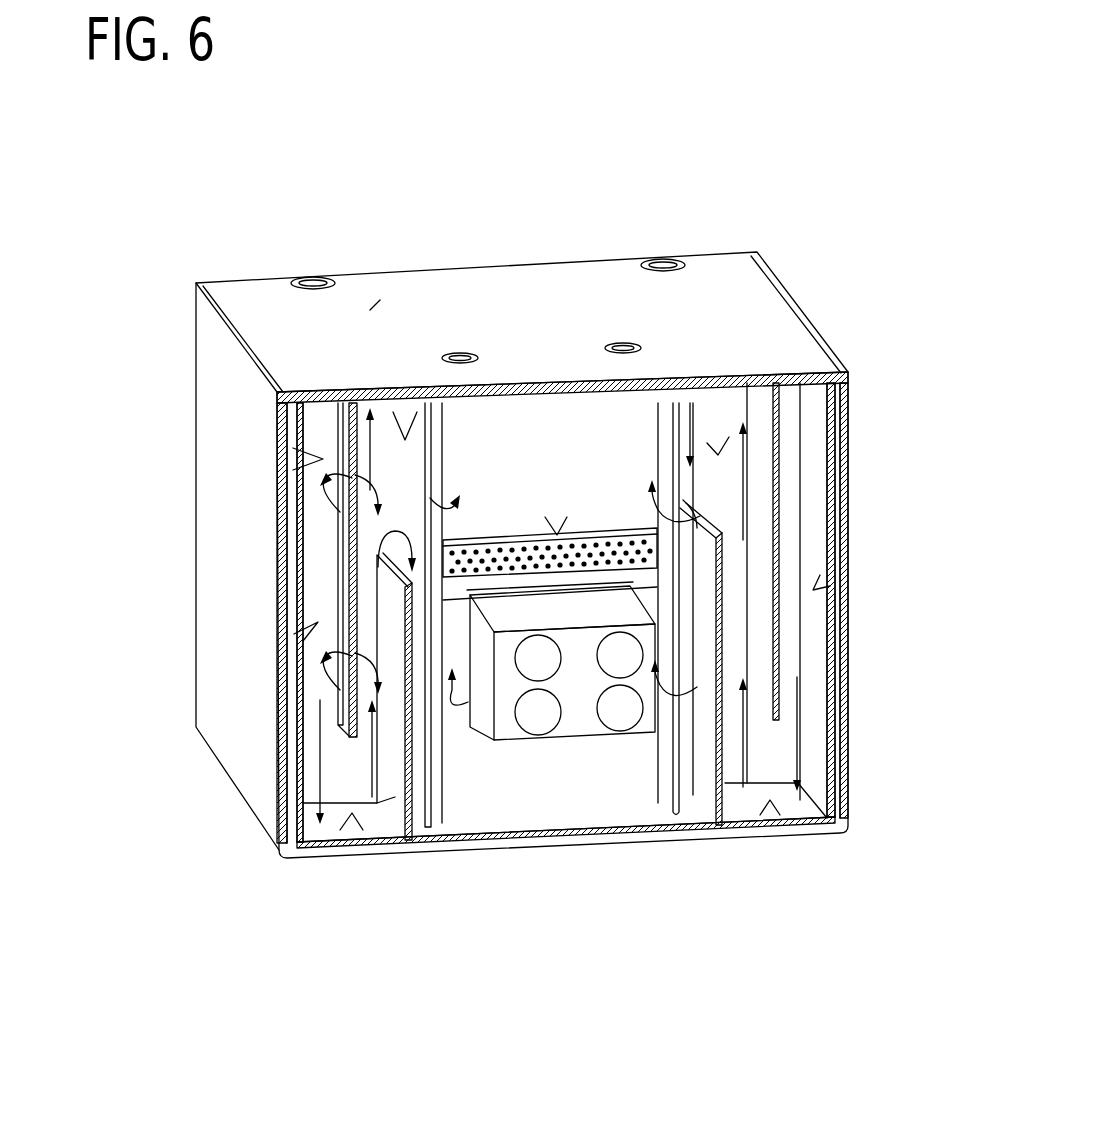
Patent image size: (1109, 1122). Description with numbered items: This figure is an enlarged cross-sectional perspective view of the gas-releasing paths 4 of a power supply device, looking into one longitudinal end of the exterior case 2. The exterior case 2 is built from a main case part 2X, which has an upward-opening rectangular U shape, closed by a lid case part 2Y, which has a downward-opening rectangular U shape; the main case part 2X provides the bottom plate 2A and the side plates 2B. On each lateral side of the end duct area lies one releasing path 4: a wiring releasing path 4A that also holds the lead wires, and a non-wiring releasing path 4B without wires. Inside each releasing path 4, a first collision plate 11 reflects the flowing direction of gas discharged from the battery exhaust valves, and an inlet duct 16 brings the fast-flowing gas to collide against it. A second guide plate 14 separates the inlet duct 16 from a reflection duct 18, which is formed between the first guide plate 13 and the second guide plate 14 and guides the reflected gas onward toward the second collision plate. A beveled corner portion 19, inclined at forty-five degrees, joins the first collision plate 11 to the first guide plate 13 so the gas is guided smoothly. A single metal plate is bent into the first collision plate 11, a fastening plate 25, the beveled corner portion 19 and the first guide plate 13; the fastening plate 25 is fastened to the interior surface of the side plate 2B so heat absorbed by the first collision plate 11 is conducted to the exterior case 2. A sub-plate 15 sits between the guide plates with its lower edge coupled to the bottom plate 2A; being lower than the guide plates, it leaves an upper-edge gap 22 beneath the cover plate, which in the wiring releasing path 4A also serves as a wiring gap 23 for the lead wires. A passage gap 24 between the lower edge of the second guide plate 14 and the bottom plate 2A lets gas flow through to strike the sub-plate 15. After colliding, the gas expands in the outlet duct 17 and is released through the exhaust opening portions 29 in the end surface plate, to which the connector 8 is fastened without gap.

The exterior case 2 is at (818, 163).
The bottom plate 2A is at (560, 842).
The side plate 2B is at (285, 750).
The main case part 2X is at (888, 1026).
The lid case part 2Y is at (372, 305).
The gas-releasing path 4 is at (735, 160).
The wiring releasing path 4A is at (392, 408).
The non-wiring releasing path 4B is at (725, 400).
The connector 8 is at (510, 723).
The first collision plate 11 is at (318, 428).
The first guide plate 13 is at (433, 445).
The second guide plate 14 is at (340, 587).
The sub-plate 15 is at (390, 853).
The inlet duct 16 is at (287, 640).
The outlet duct 17 is at (455, 850).
The reflection duct 18 is at (603, 847).
The beveled corner portion 19 is at (673, 403).
The upper-edge gap 22 is at (384, 415).
The wiring gap 23 is at (287, 460).
The passage gap 24 is at (355, 857).
The fastening plate 25 is at (280, 553).
The exhaust opening portion 29 is at (557, 533).